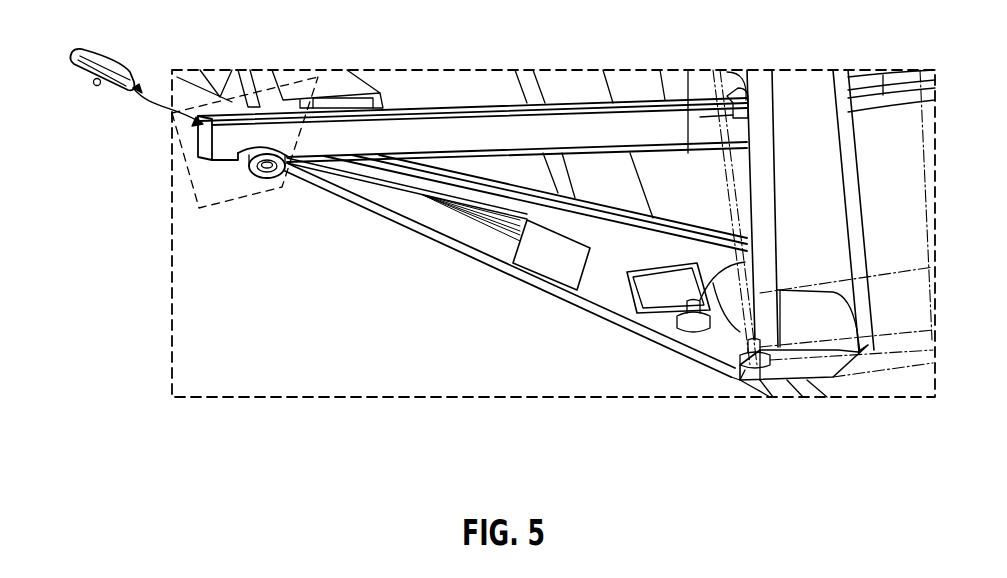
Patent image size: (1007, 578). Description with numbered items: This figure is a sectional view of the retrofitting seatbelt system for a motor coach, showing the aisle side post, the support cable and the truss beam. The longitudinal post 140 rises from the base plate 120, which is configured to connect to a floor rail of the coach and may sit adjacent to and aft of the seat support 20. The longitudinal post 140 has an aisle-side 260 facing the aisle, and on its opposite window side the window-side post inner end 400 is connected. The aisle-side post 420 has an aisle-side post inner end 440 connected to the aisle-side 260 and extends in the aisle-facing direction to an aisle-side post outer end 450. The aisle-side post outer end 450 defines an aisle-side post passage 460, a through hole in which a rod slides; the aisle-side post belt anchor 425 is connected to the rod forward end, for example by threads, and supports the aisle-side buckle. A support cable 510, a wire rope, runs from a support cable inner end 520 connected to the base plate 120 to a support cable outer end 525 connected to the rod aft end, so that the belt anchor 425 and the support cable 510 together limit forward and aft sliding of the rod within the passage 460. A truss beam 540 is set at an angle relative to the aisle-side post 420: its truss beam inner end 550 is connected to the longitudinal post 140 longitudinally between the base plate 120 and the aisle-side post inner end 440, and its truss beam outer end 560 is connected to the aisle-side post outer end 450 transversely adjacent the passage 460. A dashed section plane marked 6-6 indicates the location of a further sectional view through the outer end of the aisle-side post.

The seat support 20 is at (567, 80).
The base plate 120 is at (807, 357).
The longitudinal post 140 is at (812, 80).
The aisle-side 260 is at (737, 97).
The window-side post inner end 400 is at (868, 113).
The aisle-side post 420 is at (478, 133).
The aisle-side post belt anchor 425 is at (76, 78).
The aisle-side post inner end 440 is at (700, 117).
The aisle-side post outer end 450 is at (222, 123).
The aisle-side post passage 460 is at (226, 152).
The support cable 510 is at (490, 260).
The support cable inner end 520 is at (710, 363).
The support cable outer end 525 is at (283, 178).
The truss beam 540 is at (607, 240).
The truss beam inner end 550 is at (713, 285).
The truss beam outer end 560 is at (383, 170).
The section line 6-6 is at (253, 193).